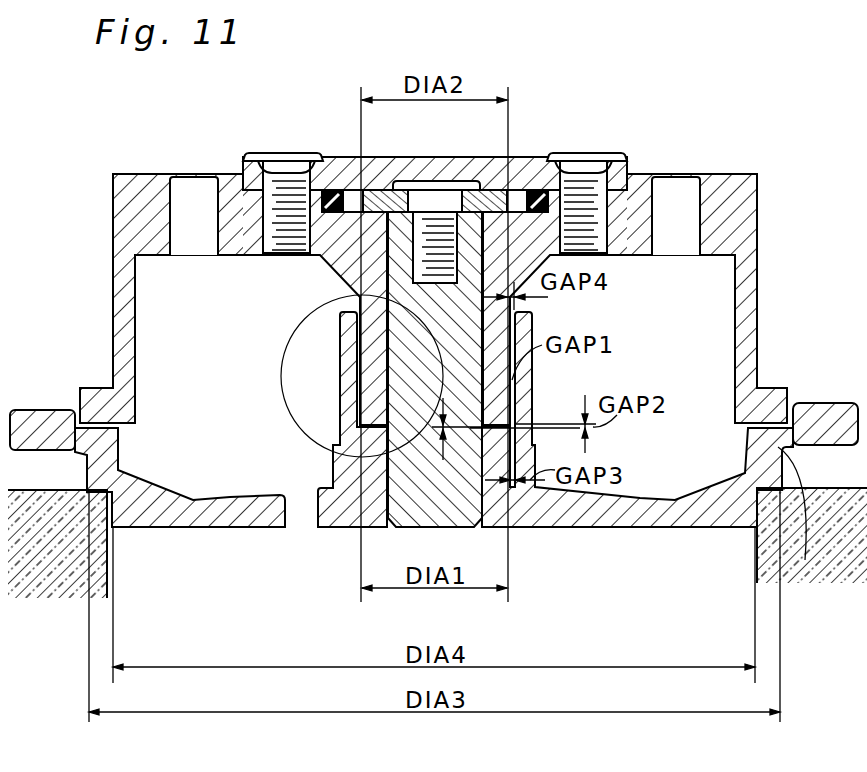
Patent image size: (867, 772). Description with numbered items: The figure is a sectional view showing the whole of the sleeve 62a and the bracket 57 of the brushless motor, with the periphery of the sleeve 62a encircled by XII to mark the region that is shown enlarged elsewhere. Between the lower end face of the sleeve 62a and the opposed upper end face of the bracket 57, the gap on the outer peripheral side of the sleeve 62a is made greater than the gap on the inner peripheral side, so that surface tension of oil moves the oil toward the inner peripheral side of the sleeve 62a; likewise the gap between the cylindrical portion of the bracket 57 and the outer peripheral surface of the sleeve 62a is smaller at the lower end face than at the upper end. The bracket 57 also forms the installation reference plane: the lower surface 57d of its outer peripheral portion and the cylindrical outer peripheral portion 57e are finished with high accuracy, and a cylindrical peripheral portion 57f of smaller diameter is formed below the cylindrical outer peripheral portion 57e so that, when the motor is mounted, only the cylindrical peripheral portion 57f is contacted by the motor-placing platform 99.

The bracket 57 is at (558, 528).
The lower surface of the outer peripheral portion of the bracket 57d is at (823, 447).
The cylindrical outer peripheral portion 57e is at (763, 553).
The cylindrical peripheral portion 57f is at (765, 550).
The sleeve 62a is at (352, 407).
The motor-placing platform 99 is at (65, 550).
The encircled region XII is at (280, 356).